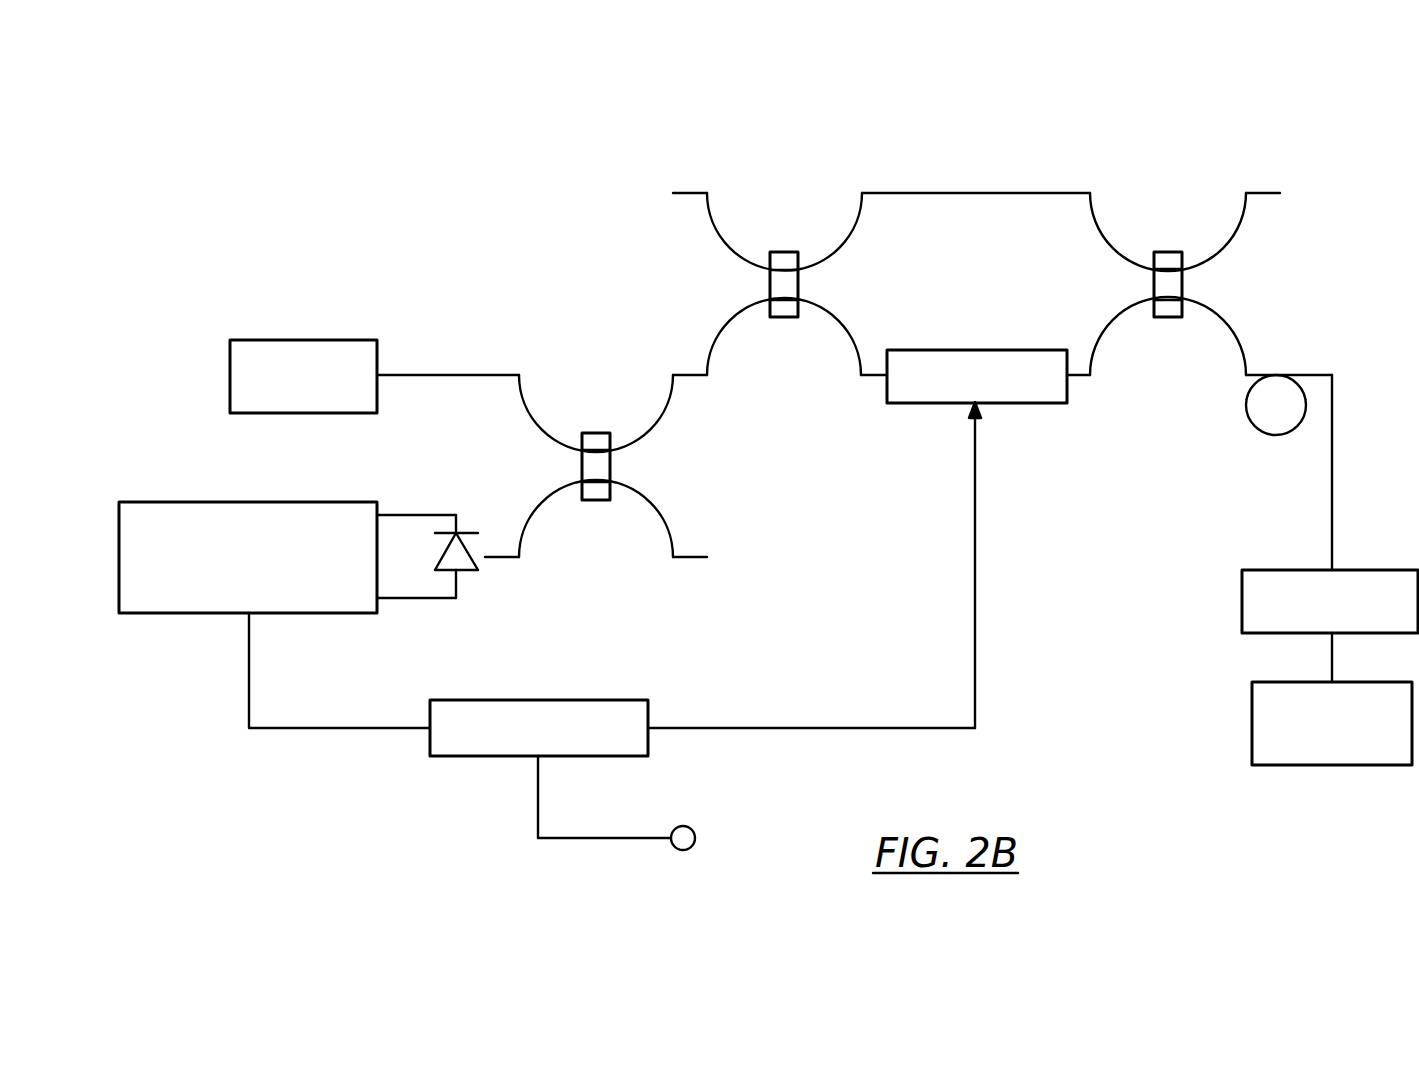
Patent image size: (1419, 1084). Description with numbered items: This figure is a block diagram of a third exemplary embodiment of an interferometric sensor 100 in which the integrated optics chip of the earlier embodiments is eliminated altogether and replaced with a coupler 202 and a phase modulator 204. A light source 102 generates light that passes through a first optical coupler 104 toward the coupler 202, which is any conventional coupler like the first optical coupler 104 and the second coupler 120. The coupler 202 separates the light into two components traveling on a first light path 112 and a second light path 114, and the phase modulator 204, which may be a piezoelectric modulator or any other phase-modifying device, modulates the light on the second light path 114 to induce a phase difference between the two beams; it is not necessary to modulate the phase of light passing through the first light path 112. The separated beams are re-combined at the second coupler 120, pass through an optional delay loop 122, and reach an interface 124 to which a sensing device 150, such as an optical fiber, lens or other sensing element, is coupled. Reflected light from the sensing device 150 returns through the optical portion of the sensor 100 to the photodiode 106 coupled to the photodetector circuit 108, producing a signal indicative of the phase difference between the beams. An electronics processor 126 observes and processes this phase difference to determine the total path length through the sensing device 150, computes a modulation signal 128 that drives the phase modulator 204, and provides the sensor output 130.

The sensor 100 is at (1294, 138).
The light source 102 is at (352, 350).
The first optical coupler 104 is at (598, 433).
The photodiode 106 is at (456, 534).
The photodetector circuit 108 is at (197, 520).
The first light path 112 is at (1007, 193).
The second light path 114 is at (873, 374).
The second coupler 120 is at (1168, 252).
The delay loop 122 is at (1263, 408).
The interface 124 is at (1242, 613).
The electronics processor 126 is at (513, 710).
The modulation signal 128 is at (975, 653).
The sensor output 130 is at (690, 827).
The sensing device 150 is at (1252, 713).
The coupler 202 is at (785, 252).
The phase modulator 204 is at (970, 357).